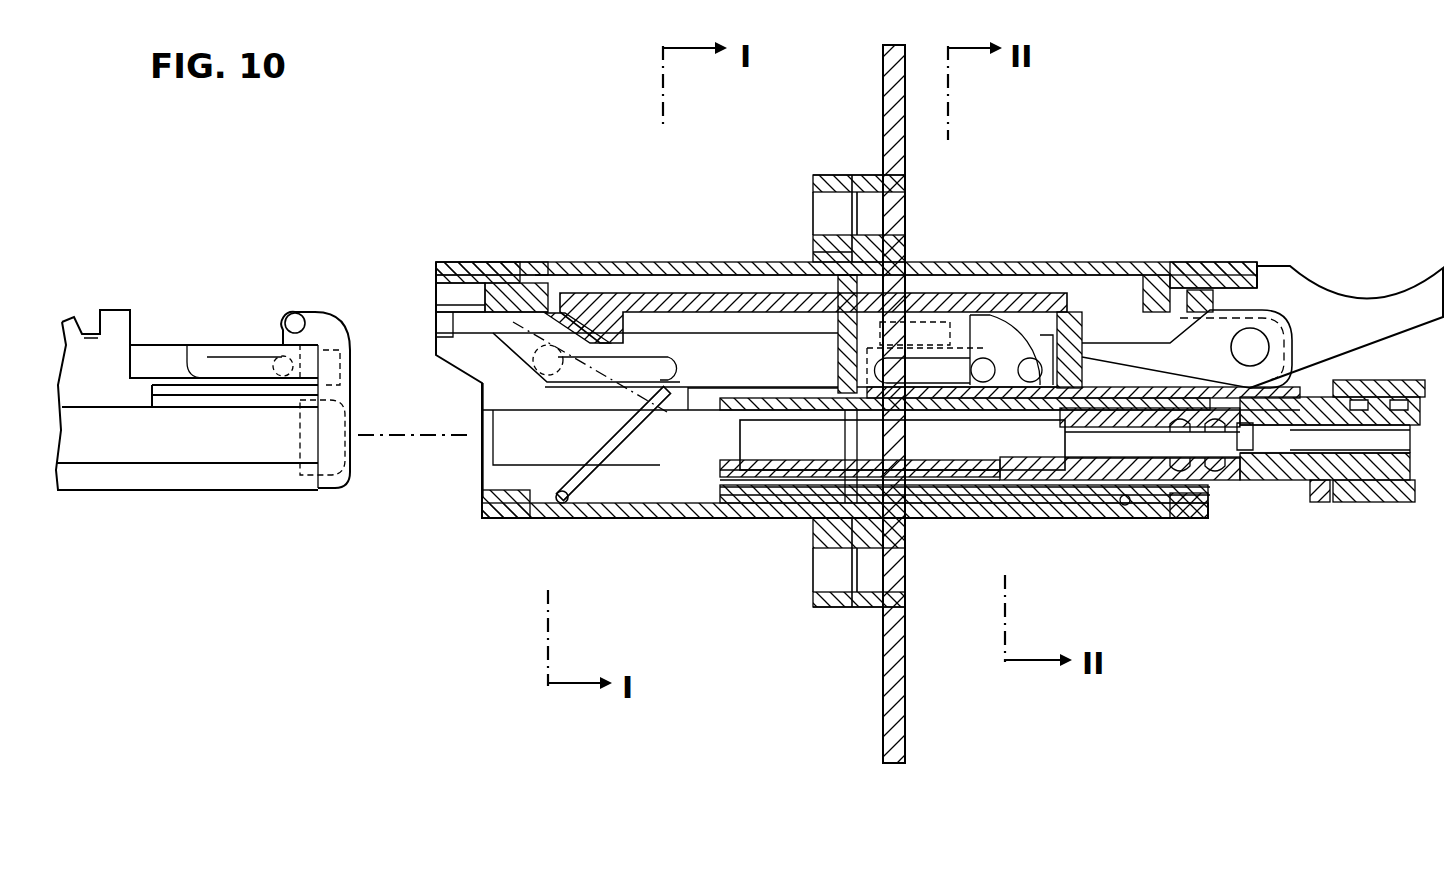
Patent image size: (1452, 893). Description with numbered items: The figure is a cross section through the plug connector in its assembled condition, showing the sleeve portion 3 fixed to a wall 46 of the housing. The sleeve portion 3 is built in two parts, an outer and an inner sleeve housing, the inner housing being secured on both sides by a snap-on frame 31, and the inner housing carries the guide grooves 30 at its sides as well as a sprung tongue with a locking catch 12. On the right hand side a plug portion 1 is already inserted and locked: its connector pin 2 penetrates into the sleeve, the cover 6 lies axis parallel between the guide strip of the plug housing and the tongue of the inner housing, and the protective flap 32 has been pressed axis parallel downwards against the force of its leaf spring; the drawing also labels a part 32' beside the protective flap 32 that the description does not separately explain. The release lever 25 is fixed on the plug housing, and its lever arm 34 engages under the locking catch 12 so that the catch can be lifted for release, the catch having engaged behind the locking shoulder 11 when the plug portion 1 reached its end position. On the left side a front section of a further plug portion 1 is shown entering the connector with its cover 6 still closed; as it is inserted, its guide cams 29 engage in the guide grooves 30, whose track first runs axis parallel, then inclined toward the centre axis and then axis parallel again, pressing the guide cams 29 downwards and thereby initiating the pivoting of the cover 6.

The plug portion 1 is at (218, 520).
The connector pin 2 is at (982, 445).
The sleeve portion 3 is at (745, 250).
The cover 6 is at (620, 330).
The locking shoulder 11 is at (115, 312).
The locking catch 12 is at (1100, 315).
The release lever 25 is at (1378, 308).
The guide cams 29 is at (296, 314).
The guide grooves 30 is at (437, 300).
The snap-on frame 31 is at (467, 262).
The protective flap 32 is at (613, 489).
The sleeve 32' is at (980, 493).
The lever arm 34 is at (1138, 350).
The wall 46 is at (893, 722).